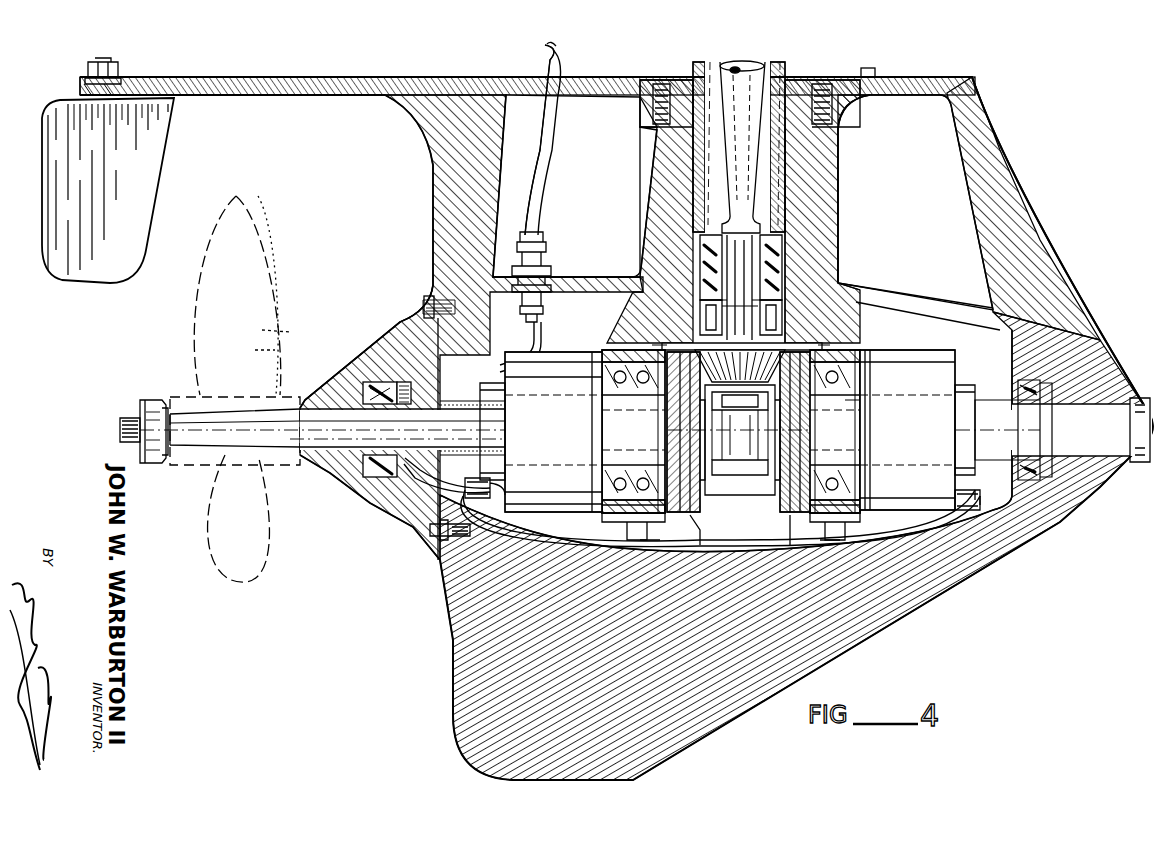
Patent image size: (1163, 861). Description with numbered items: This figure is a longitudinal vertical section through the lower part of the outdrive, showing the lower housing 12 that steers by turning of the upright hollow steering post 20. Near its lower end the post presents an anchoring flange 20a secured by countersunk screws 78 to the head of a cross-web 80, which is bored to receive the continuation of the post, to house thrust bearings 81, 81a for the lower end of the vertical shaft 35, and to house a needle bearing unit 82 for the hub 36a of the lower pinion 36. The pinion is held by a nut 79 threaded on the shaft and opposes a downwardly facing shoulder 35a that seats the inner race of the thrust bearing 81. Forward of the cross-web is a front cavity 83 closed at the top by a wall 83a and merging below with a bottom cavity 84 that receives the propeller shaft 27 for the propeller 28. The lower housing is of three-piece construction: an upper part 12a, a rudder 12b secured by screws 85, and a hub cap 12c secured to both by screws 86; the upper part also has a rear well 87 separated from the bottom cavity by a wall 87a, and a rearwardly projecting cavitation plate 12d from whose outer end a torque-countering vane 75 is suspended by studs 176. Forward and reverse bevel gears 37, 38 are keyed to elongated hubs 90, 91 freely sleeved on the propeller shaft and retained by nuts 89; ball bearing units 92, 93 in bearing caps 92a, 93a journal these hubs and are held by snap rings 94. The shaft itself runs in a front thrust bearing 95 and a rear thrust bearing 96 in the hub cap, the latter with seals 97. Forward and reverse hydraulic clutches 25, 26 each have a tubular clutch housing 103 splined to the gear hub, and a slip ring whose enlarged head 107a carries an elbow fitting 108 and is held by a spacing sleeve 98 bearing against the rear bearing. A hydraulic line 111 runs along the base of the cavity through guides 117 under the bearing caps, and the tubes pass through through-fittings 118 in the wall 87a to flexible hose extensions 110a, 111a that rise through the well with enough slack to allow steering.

The lower housing 12 is at (616, 411).
The upper part 12a is at (1033, 258).
The rudder 12b is at (698, 745).
The hub cap 12c is at (365, 357).
The cavitation plate 12d is at (288, 77).
The steering post 20 is at (792, 78).
The anchoring flange 20a is at (684, 78).
The forward hydraulic clutch 25 is at (575, 352).
The reverse hydraulic clutch 26 is at (907, 417).
The propeller shaft 27 is at (364, 428).
The propeller 28 is at (275, 331).
The vertical shaft 35 is at (758, 50).
The shoulder 35a is at (740, 287).
The lower pinion 36 is at (738, 348).
The hub 36a is at (768, 306).
The forward bevel gear 37 is at (688, 490).
The reverse bevel gear 38 is at (792, 492).
The skeg 75 is at (62, 290).
The countersunk screws 78 is at (657, 80).
The nut 79 is at (750, 400).
The cross-web 80 is at (822, 198).
The thrust bearing 81 is at (776, 248).
The thrust bearing 81a is at (780, 272).
The needle bearing unit 82 is at (782, 305).
The front cavity 83 is at (927, 163).
The wall 83a is at (922, 77).
The bottom cavity 84 is at (750, 534).
The screws 85 is at (1143, 462).
The screws 86 is at (430, 532).
The rear cavity or well 87 is at (618, 193).
The wall 87a is at (597, 276).
The nuts 89 is at (710, 455).
The elongated hub 90 is at (641, 434).
The elongated hub 91 is at (839, 431).
The ball bearing unit 92 is at (650, 390).
The bearing cap 92a is at (658, 515).
The ball bearing unit 93 is at (850, 396).
The bearing cap 93a is at (840, 515).
The snap rings 94 is at (850, 426).
The front thrust bearing 95 is at (1035, 460).
The rear thrust bearing 96 is at (390, 404).
The seals 97 is at (338, 478).
The spacing sleeve 98 is at (458, 400).
The tubular clutch housing 103 is at (898, 352).
The enlarged head 107a is at (978, 372).
The elbow fitting 108 is at (955, 492).
The flexible hose extension 110a is at (546, 142).
The hydraulic line 111 is at (915, 530).
The flexible hose extension 111a is at (545, 47).
The guides 117 is at (620, 527).
The through-fittings 118 is at (527, 276).
The studs 176 is at (98, 62).